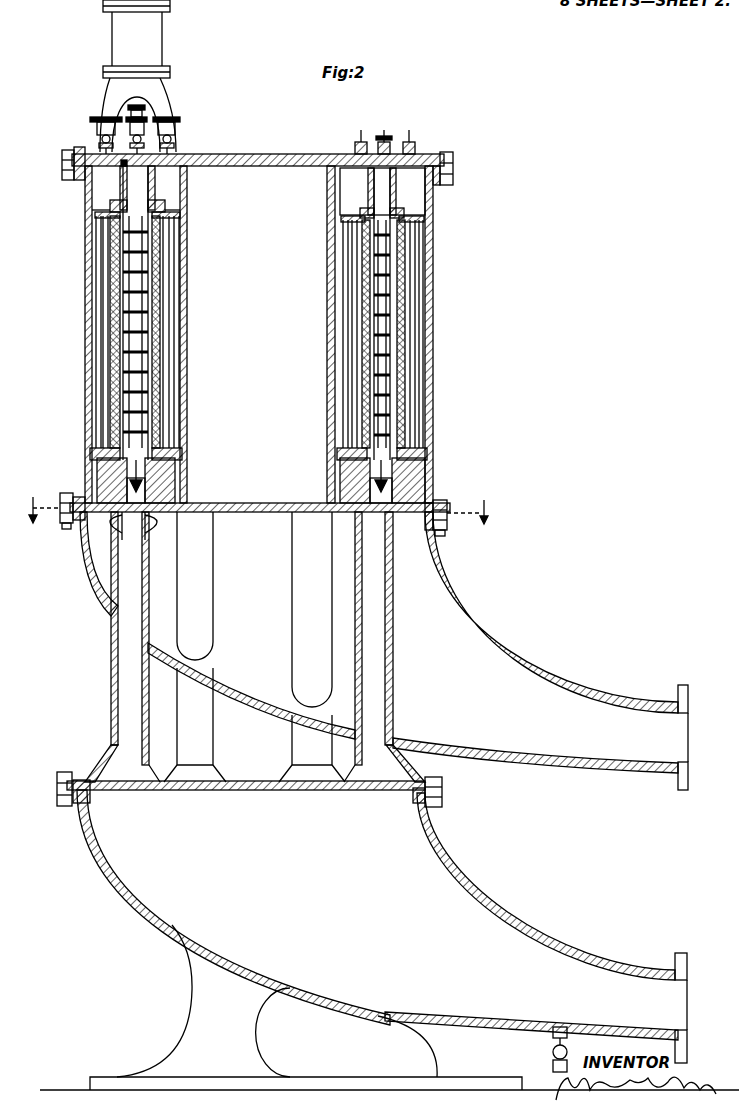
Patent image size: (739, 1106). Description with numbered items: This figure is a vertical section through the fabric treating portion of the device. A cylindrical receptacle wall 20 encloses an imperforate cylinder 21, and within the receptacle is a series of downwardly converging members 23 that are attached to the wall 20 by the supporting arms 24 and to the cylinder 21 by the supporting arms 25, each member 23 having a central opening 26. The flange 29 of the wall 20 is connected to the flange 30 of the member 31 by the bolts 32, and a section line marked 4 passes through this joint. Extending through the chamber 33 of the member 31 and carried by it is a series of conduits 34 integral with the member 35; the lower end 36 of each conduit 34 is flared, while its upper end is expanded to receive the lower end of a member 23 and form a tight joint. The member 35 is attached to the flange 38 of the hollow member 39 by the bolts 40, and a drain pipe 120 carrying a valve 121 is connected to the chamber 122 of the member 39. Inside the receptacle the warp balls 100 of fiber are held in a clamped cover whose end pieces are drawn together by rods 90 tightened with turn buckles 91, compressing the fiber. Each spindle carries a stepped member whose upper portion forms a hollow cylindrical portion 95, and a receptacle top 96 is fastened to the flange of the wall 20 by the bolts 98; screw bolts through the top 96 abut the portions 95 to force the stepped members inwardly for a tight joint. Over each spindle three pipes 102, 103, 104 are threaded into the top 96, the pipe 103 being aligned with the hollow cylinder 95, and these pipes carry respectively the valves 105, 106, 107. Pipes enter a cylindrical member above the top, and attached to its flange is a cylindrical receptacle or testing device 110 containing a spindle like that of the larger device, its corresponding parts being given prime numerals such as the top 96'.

The receptacle top of the testing device 96' is at (113, 9).
The cylindrical receptacle or testing device 110 is at (162, 48).
The pipe 104 is at (166, 110).
The pipe 102 is at (100, 108).
The valve 105 is at (102, 140).
The valve 106 is at (140, 139).
The valve 107 is at (168, 140).
The receptacle top 96 is at (258, 145).
The bolts 98 is at (62, 172).
The pipe 103 is at (121, 167).
The hollow cylindrical portion 95 is at (160, 192).
The rods 90 is at (422, 240).
The warp balls 100 is at (112, 292).
The turn buckles 91 is at (104, 332).
The imperforate cylinder 21 is at (180, 342).
The cylindrical receptacle wall 20 is at (85, 356).
The supporting arms 24 is at (92, 455).
The supporting arms 25 is at (172, 468).
The downwardly converging members 23 is at (176, 486).
The central opening 26 is at (176, 497).
The flange 29 is at (60, 500).
The bolts 32 is at (73, 497).
The section line 4- 4 is at (252, 511).
The flange 30 is at (62, 528).
The member 31 is at (458, 612).
The conduits 34 is at (111, 690).
The chamber 33 is at (254, 609).
The lower end of conduit 36 is at (100, 765).
The bolts 40 is at (62, 772).
The flange 38 is at (442, 798).
The member 35 is at (256, 790).
The chamber 122 is at (389, 940).
The hollow member 39 is at (470, 902).
The valve 121 is at (556, 1028).
The drain pipe 120 is at (553, 1052).